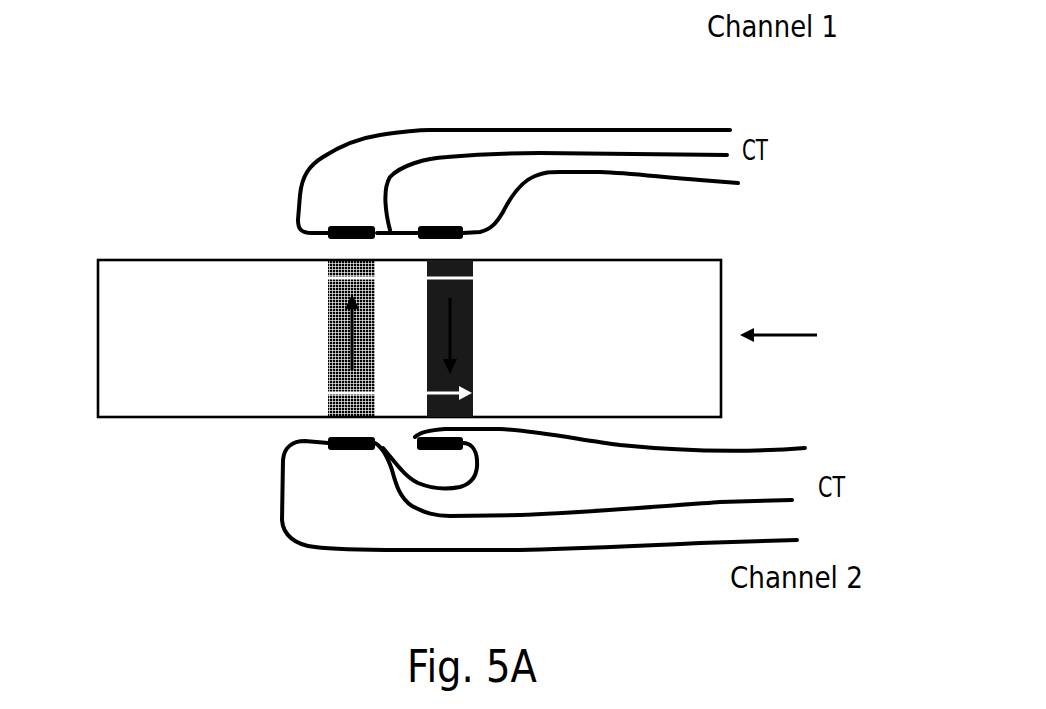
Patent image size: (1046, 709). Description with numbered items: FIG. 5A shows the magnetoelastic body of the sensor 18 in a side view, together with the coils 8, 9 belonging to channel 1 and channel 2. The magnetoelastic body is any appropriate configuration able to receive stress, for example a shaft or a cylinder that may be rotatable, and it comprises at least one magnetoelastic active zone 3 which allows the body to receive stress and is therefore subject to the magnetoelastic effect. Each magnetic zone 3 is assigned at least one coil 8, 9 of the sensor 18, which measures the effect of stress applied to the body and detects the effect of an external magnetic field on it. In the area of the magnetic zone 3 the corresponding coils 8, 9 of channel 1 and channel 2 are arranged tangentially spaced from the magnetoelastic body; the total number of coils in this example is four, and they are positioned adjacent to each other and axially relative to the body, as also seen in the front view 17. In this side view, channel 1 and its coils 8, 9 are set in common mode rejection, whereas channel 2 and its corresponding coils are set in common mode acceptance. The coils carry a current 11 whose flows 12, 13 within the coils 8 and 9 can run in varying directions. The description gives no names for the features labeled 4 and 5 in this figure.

The channel 1 is at (150, 297).
The channel 2 is at (328, 362).
The magnetoelastic active zone 3 is at (473, 312).
The first magnetization direction 4 is at (328, 333).
The second magnetization direction 5 is at (473, 333).
The coil 8 is at (358, 225).
The coil 9 is at (440, 225).
The current 11 is at (429, 339).
The flow of the current 12 is at (328, 278).
The flow of the current 13 is at (475, 260).
The front view 17 is at (653, 313).
The sensor 18 is at (797, 336).